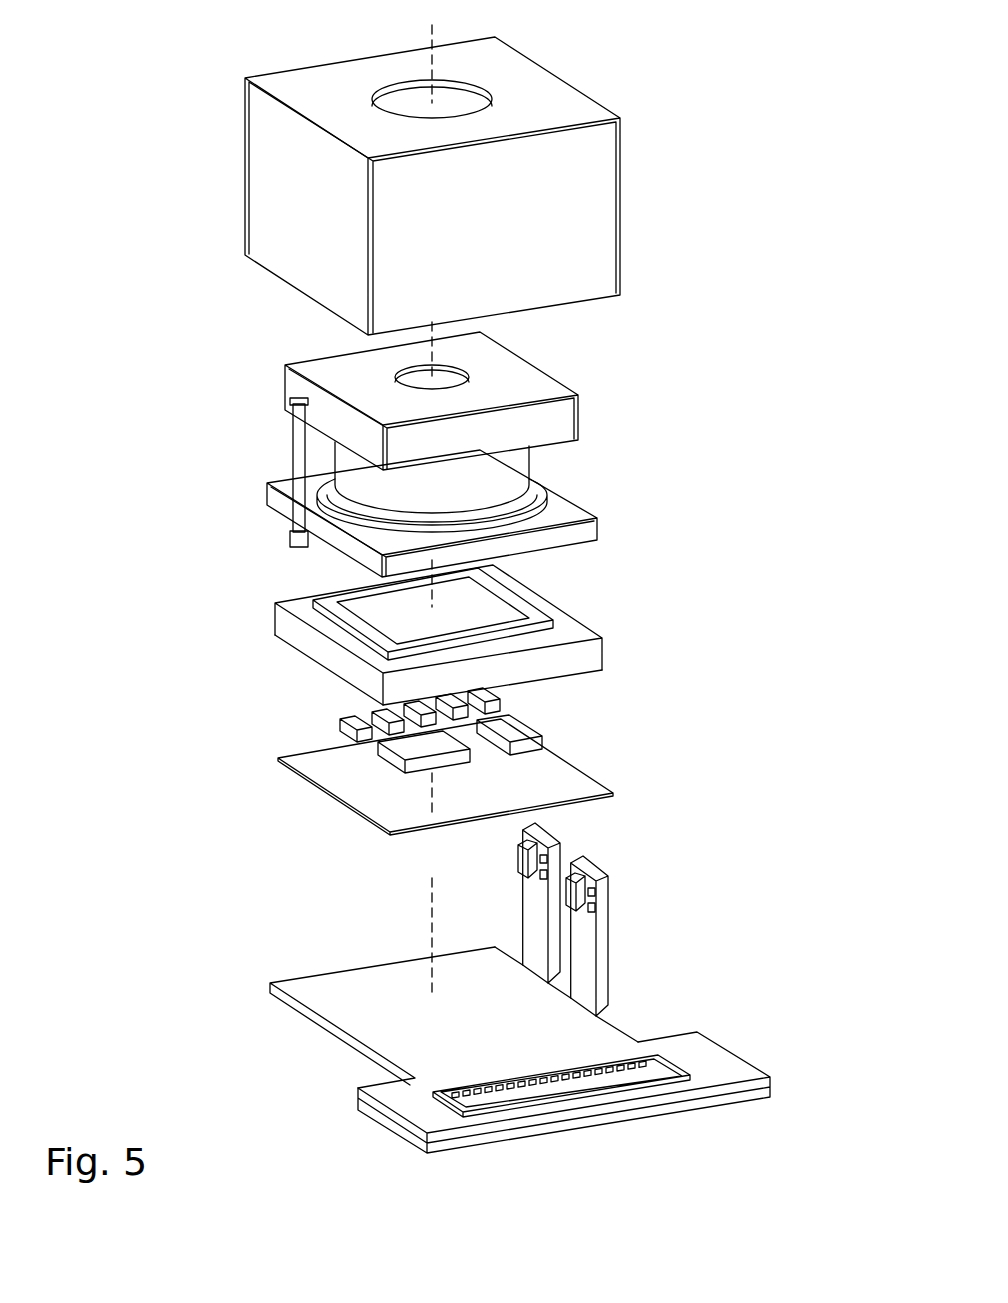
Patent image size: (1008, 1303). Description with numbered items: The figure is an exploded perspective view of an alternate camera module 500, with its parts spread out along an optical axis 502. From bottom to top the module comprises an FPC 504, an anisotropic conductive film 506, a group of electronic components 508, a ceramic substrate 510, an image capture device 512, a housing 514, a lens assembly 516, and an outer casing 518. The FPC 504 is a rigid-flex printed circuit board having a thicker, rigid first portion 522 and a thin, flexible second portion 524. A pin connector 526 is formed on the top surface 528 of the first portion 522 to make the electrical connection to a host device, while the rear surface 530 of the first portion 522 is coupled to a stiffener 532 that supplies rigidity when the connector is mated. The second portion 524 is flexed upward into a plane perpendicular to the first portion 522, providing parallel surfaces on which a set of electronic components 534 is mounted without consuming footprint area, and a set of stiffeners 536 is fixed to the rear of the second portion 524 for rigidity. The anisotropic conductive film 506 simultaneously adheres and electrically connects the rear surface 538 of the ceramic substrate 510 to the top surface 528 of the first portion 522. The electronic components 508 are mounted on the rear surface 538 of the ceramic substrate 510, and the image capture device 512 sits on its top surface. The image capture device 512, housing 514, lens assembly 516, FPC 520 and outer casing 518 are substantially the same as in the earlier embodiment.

The camera module 500 is at (815, 155).
The optical axis 502 is at (430, 36).
The FPC 504 is at (228, 963).
The anisotropic conductive film 506 is at (387, 803).
The electronic components 508 is at (336, 740).
The ceramic substrate 510 is at (617, 655).
The image capture device 512 is at (533, 617).
The housing 514 is at (563, 512).
The lens assembly 516 is at (587, 380).
The outer casing 518 is at (200, 192).
The FPC 520 is at (300, 461).
The first portion 522 is at (354, 983).
The second portion 524 is at (623, 890).
The pin connector 526 is at (668, 1058).
The top surface 528 is at (412, 997).
The rear surface 530 is at (333, 1032).
The stiffener 532 is at (603, 1113).
The electronic components 534 is at (562, 893).
The stiffeners 536 is at (607, 987).
The rear surface 538 is at (552, 681).